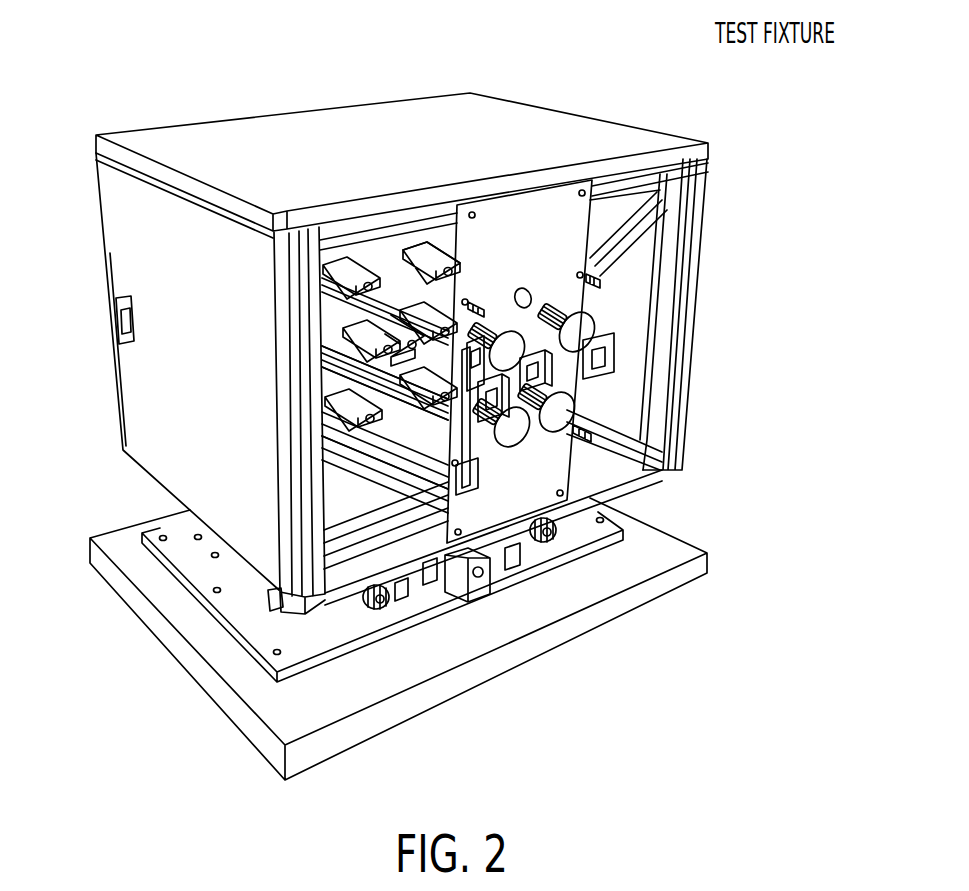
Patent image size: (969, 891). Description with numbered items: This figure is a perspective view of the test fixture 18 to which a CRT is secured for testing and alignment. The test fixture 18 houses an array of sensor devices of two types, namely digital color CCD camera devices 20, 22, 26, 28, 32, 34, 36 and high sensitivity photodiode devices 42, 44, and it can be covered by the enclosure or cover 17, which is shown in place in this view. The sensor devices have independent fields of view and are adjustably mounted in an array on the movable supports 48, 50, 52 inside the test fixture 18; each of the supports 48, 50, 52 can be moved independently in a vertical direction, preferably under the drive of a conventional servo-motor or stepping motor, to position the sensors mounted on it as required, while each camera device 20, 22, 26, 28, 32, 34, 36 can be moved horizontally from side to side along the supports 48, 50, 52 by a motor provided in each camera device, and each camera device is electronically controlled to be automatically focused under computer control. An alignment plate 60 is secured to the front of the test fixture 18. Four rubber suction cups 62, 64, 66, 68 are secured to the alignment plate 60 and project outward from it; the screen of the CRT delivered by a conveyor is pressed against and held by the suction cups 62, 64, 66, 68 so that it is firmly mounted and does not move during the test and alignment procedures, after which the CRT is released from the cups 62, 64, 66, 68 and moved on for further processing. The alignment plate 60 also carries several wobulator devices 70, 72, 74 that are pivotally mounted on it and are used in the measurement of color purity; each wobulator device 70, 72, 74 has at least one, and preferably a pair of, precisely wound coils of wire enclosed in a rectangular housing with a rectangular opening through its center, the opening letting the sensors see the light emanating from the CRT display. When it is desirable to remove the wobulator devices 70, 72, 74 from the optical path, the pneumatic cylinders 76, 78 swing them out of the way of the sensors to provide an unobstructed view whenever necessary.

The cover 17 is at (400, 125).
The test fixture 18 is at (715, 115).
The digital color CCD camera device 20 is at (360, 268).
The digital color CCD camera device 22 is at (437, 253).
The digital color CCD camera device 26 is at (345, 337).
The digital color CCD camera device 28 is at (428, 326).
The digital color CCD camera device 32 is at (382, 320).
The digital color CCD camera device 34 is at (345, 428).
The digital color CCD camera device 36 is at (413, 392).
The high sensitivity photodiode device 42 is at (393, 338).
The high sensitivity photodiode device 44 is at (472, 350).
The movable support 48 is at (392, 268).
The movable support 50 is at (328, 373).
The movable support 52 is at (328, 444).
The alignment plate 60 is at (530, 215).
The rubber suction cup 62 is at (512, 345).
The rubber suction cup 64 is at (578, 324).
The rubber suction cup 66 is at (510, 440).
The rubber suction cup 68 is at (560, 425).
The wobulator device 70 is at (503, 410).
The wobulator device 72 is at (547, 376).
The wobulator device 74 is at (612, 352).
The pneumatic cylinder 76 is at (473, 483).
The pneumatic cylinder 78 is at (590, 448).